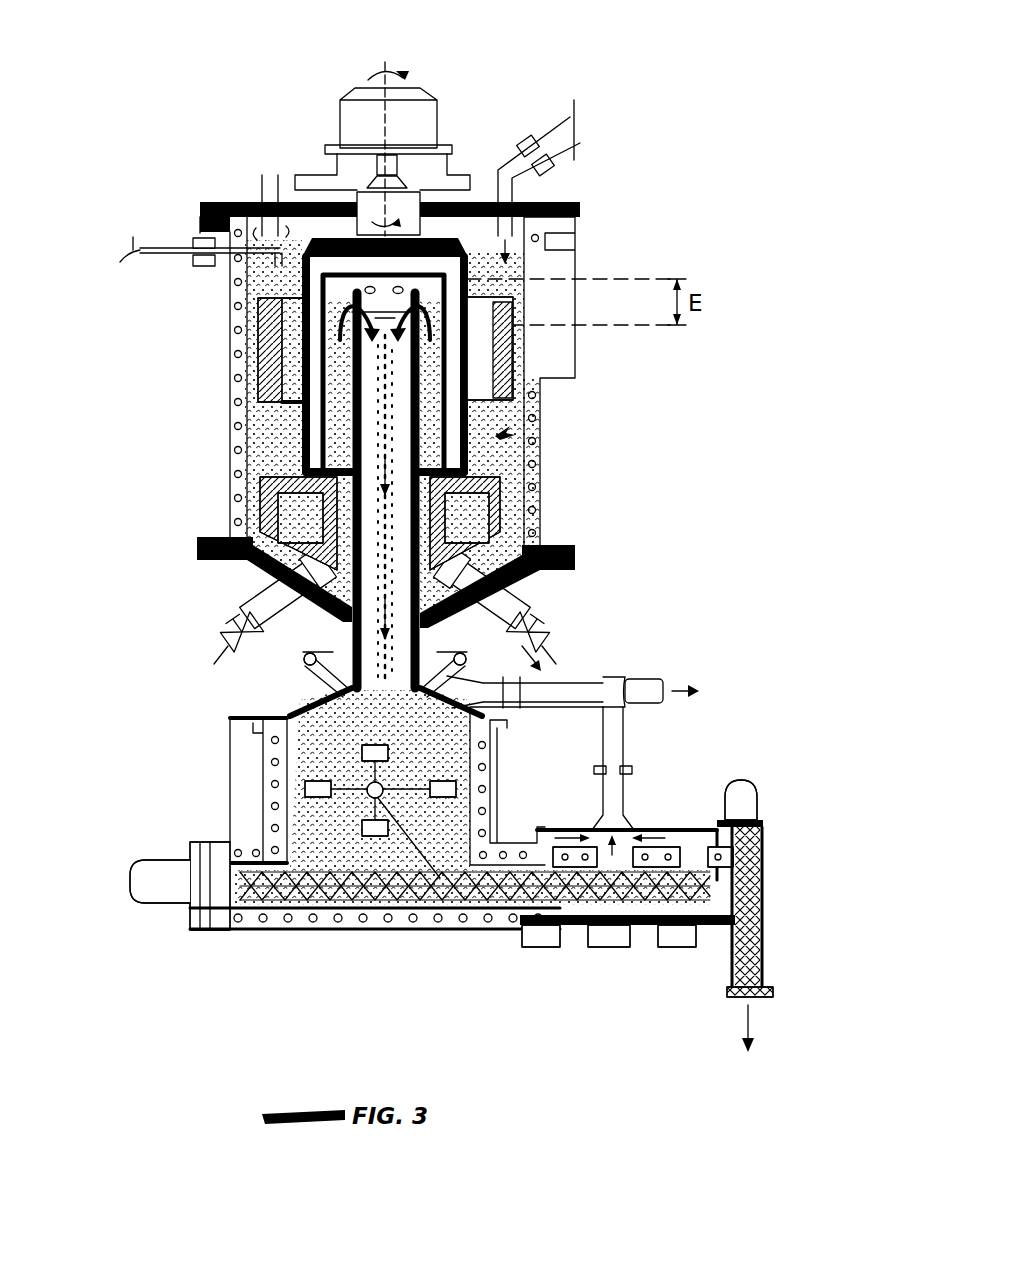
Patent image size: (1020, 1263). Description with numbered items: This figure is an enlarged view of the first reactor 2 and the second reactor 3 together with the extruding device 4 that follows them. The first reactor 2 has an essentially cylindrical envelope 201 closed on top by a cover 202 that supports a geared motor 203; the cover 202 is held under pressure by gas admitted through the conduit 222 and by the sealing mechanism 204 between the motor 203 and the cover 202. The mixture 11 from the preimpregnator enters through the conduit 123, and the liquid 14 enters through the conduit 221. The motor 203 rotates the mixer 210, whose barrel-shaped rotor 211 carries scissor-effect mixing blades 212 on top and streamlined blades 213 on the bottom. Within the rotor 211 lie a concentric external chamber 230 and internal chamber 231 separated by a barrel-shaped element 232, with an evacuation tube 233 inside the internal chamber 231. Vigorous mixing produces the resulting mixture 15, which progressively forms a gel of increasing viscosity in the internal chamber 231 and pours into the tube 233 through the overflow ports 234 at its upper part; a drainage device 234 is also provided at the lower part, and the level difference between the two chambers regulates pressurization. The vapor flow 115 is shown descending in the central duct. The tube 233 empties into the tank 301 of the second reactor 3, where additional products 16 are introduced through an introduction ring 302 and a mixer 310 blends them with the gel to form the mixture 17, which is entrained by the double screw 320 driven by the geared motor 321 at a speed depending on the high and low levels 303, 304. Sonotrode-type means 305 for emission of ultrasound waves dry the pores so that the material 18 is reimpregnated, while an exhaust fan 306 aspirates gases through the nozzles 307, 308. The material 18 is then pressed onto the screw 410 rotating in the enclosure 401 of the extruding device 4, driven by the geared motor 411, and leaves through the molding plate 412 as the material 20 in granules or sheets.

The first reactor 2 is at (160, 417).
The second reactor 3 is at (155, 796).
The extruding device 4 is at (822, 822).
The mixture 11 is at (575, 157).
The liquid 14 is at (142, 252).
The resulting mixture 15 is at (300, 455).
The additional products 16 is at (457, 672).
The mixture 17 is at (357, 848).
The material 18 is at (688, 853).
The material 20 is at (757, 1013).
The vapor flow 115 is at (386, 504).
The conduit 123 is at (550, 125).
The envelope 201 is at (300, 412).
The cover 202 is at (578, 209).
The geared motor 203 is at (423, 118).
The sealing mechanism 204 is at (345, 200).
The mixer 210 is at (538, 440).
The barrel-shaped rotor 211 is at (470, 450).
The mixing blades 212 is at (495, 362).
The streamlined blades 213 is at (490, 523).
The conduit 221 is at (166, 260).
The conduit 222 is at (262, 193).
The external chamber 230 is at (452, 270).
The internal chamber 231 is at (470, 411).
The barrel-shaped element 232 is at (300, 318).
The evacuation tube 233 is at (300, 470).
The overflow ports 234 is at (470, 280).
The tank 301 is at (487, 773).
The introduction ring 302 is at (290, 662).
The high level 303 is at (258, 727).
The low level 304 is at (270, 750).
The means for emission of ultrasound waves 305 is at (540, 947).
The exhaust fan 306 is at (615, 680).
The nozzle 307 is at (510, 703).
The nozzle 308 is at (632, 790).
The mixer 310 is at (433, 913).
The double screw 320 is at (292, 927).
The geared motor 321 is at (166, 888).
The enclosure 401 is at (760, 935).
The screw 410 is at (762, 860).
The geared motor 411 is at (743, 805).
The molding plate 412 is at (773, 990).